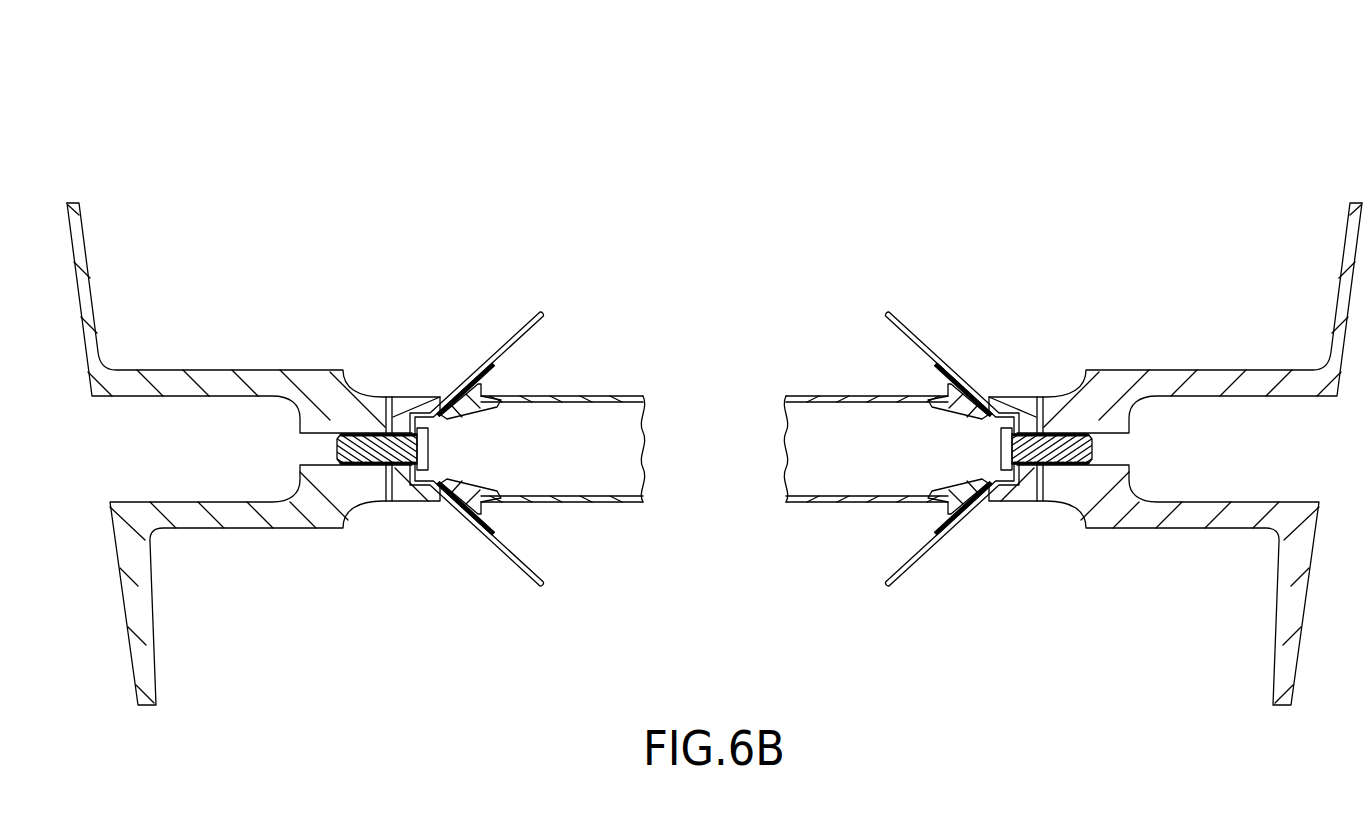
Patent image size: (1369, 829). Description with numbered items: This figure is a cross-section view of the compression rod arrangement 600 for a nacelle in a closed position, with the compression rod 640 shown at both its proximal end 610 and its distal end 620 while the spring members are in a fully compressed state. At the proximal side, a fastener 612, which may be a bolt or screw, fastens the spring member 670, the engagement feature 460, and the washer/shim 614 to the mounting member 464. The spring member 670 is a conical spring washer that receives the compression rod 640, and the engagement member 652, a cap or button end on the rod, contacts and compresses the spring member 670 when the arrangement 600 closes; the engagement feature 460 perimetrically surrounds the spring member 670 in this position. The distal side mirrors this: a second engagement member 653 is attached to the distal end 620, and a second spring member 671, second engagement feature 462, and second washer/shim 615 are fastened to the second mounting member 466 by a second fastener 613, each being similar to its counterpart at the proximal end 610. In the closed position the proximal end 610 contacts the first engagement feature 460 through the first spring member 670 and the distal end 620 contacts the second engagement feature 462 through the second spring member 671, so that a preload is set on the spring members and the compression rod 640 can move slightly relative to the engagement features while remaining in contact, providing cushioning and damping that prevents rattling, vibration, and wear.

The arrangement 600 is at (765, 190).
The proximal end 610 is at (436, 541).
The distal end 620 is at (1003, 543).
The mounting member 464 is at (137, 370).
The second mounting member 466 is at (1218, 370).
The washer/shim 614 is at (387, 397).
The second washer/shim 615 is at (1040, 397).
The fastener 612 is at (335, 456).
The second fastener 613 is at (1102, 455).
The engagement feature 460 is at (463, 376).
The second engagement feature 462 is at (937, 354).
The spring member 670 is at (488, 381).
The second spring member 671 is at (933, 525).
The engagement member 652 is at (502, 413).
The second engagement member 653 is at (968, 422).
The compression rod 640 is at (612, 395).